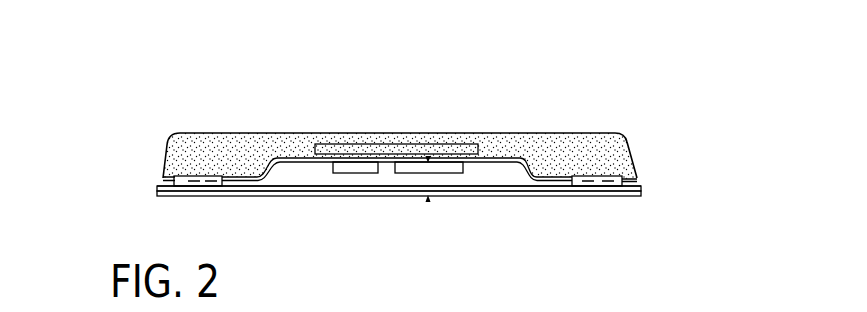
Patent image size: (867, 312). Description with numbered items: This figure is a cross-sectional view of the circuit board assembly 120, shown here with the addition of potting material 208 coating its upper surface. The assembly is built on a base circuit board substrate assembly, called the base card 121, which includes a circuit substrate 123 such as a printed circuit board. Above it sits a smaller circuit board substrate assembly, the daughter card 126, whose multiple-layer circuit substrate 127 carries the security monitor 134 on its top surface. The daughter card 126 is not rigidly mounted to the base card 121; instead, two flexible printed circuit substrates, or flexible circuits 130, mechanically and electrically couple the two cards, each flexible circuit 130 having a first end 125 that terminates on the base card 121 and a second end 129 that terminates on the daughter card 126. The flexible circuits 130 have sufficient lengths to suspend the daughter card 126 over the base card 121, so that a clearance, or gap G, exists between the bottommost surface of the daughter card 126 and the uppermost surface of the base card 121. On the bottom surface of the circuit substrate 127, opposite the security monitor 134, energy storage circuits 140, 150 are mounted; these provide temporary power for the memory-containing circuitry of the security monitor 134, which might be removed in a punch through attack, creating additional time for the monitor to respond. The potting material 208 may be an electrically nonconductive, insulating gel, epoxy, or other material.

The assembly 120 is at (660, 171).
The card 121 is at (632, 192).
The substrate 123 is at (613, 196).
The end 125 is at (204, 195).
The card 126 is at (472, 163).
The substrate 127 is at (461, 152).
The end 129 is at (268, 131).
The circuit 130 is at (267, 188).
The monitor 134 is at (377, 144).
The energy storage 140 is at (402, 174).
The energy storage 150 is at (336, 174).
The potting 208 is at (563, 133).
The gap G is at (429, 201).